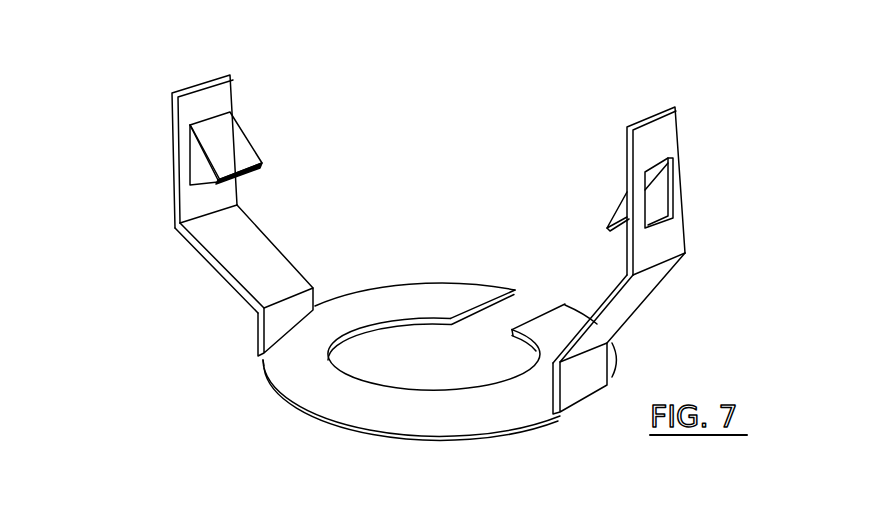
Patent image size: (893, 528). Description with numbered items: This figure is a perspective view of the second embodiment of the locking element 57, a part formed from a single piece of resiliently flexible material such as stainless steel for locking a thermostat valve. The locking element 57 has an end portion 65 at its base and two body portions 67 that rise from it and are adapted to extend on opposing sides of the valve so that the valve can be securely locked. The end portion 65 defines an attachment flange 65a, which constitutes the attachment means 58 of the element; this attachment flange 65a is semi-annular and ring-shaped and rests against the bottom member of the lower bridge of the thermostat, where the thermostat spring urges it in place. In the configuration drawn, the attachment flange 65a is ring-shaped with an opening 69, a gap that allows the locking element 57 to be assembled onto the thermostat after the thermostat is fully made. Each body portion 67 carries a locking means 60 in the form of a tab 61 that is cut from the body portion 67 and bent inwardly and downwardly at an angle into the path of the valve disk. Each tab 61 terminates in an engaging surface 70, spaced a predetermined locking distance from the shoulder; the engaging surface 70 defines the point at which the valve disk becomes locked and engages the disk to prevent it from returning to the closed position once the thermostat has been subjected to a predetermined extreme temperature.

The locking element 57 is at (405, 267).
The attachment means 58 is at (212, 335).
The locking means 60 is at (260, 128).
The tab 61 is at (409, 186).
The engaging surface 70 is at (256, 167).
The body portion 67 is at (190, 208).
The end portion 65 is at (409, 353).
The attachment flange 65a is at (287, 404).
The opening 69 is at (523, 300).